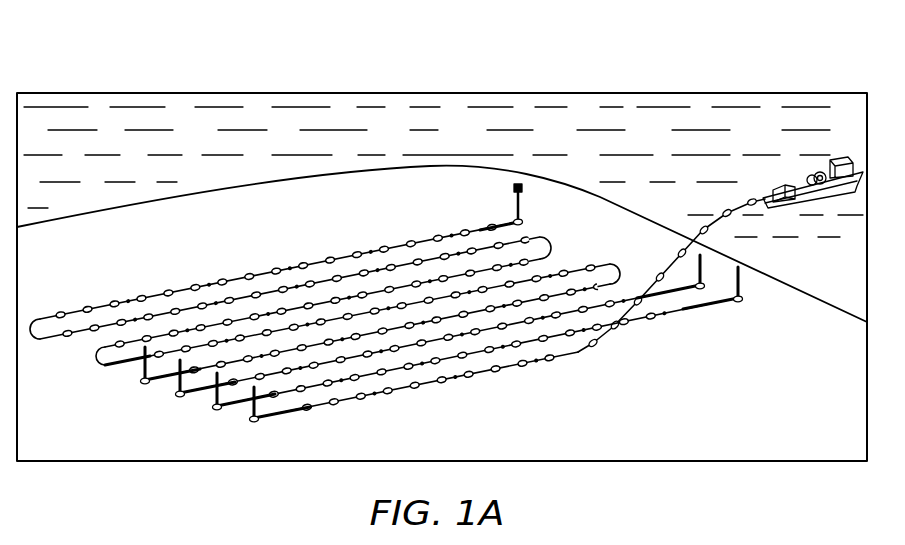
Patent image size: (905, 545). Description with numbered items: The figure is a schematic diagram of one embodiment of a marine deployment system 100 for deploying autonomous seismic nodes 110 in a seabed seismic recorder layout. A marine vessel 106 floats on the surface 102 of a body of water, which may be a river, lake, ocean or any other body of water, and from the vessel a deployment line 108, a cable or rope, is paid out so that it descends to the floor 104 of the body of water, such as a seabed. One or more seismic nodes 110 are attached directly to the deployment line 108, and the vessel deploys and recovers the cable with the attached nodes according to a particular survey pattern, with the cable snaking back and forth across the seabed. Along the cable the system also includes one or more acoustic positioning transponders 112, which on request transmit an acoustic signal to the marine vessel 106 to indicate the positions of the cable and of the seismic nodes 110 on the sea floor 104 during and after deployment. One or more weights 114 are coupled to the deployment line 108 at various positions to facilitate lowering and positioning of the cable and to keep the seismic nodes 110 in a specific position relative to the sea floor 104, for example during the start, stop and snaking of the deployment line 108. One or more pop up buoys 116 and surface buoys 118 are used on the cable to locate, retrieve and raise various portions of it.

The marine deployment system 100 is at (117, 62).
The surface 102 is at (688, 138).
The floor 104 is at (357, 192).
The marine vessel 106 is at (830, 158).
The deployment line 108 is at (738, 208).
The seismic nodes 110 is at (440, 314).
The acoustic positioning transponders 112 is at (145, 300).
The weights 114 is at (152, 383).
The pop up buoys 116 is at (740, 268).
The surface buoys 118 is at (515, 183).